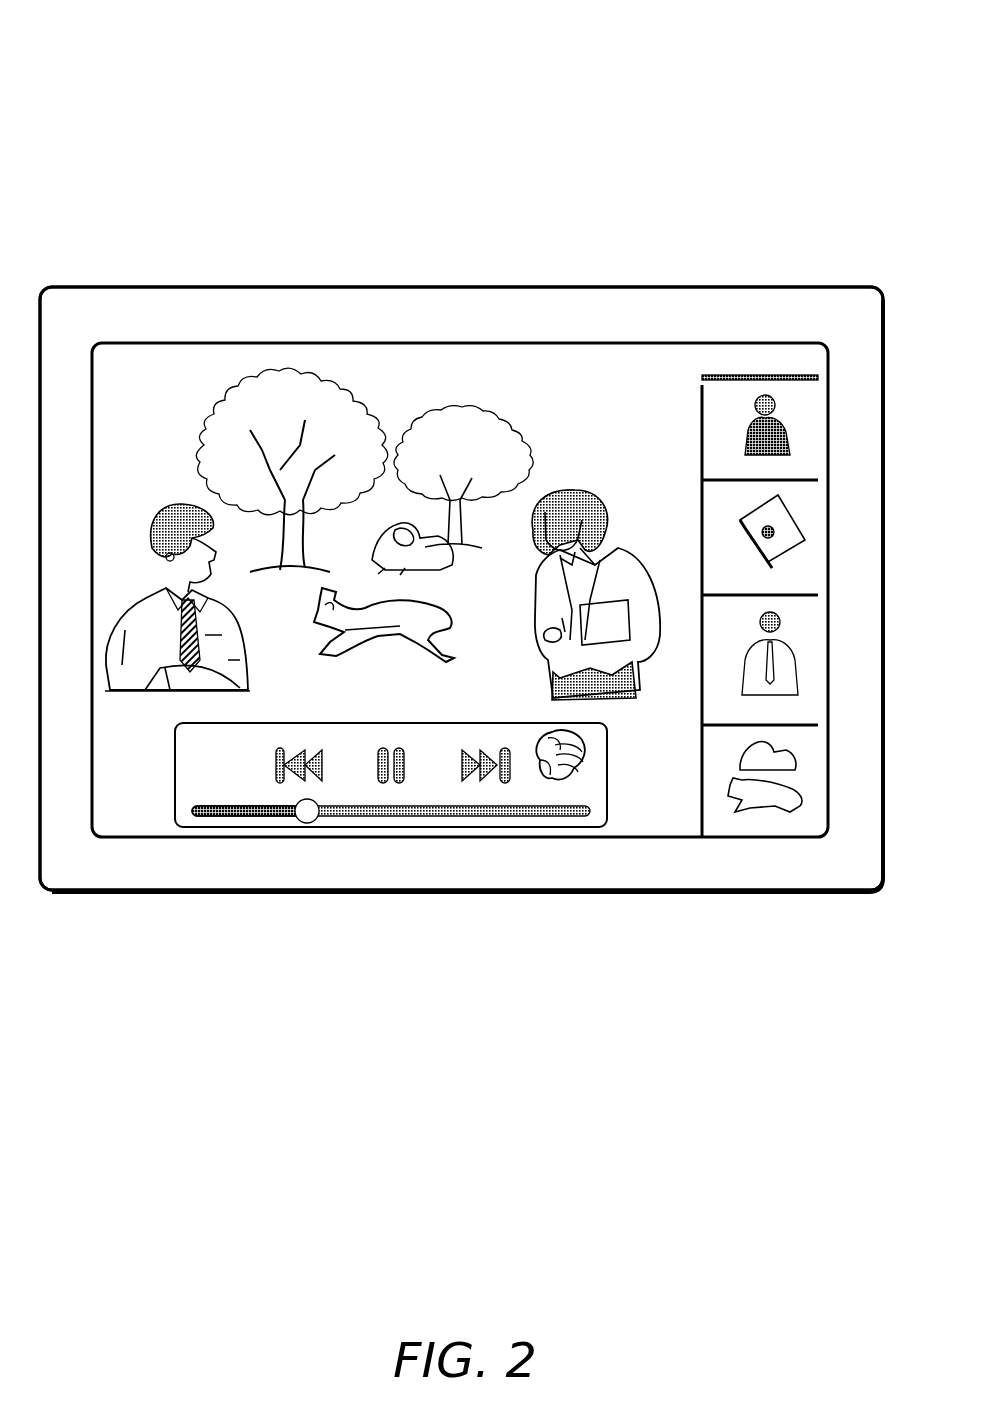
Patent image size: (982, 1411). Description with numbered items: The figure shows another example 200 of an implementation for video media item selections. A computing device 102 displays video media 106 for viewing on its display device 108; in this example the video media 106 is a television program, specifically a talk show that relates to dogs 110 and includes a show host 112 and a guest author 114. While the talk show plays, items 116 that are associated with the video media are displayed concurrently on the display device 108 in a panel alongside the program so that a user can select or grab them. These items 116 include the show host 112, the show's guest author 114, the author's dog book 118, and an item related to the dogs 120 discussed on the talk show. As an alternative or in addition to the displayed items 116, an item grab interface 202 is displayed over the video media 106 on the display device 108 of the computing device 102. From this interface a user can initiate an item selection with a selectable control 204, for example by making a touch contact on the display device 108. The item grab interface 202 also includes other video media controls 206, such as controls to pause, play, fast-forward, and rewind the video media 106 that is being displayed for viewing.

The example 200 is at (700, 68).
The computing device 102 is at (225, 287).
The video media 106 is at (397, 383).
The display device 108 is at (528, 343).
The items 116 is at (693, 383).
The guest author 114 is at (600, 492).
The dog book 118 is at (815, 517).
The show host 112 is at (155, 497).
The item related to the dogs 120 is at (815, 760).
The dogs 110 is at (391, 673).
The item grab interface 202 is at (242, 827).
The selectable control 204 is at (588, 772).
The video media controls 206 is at (418, 773).